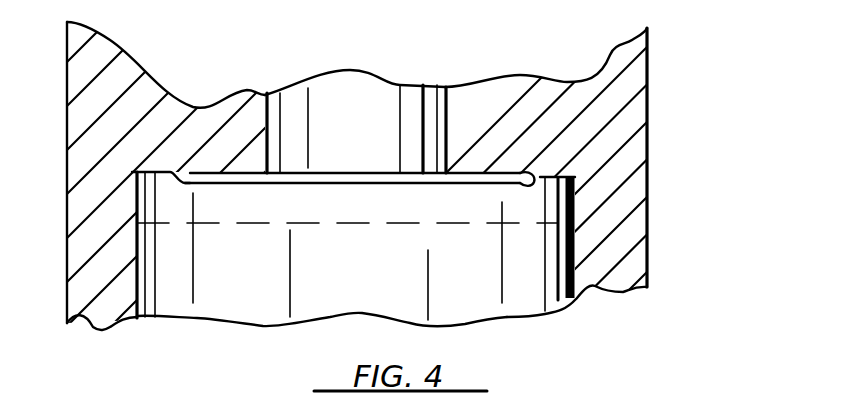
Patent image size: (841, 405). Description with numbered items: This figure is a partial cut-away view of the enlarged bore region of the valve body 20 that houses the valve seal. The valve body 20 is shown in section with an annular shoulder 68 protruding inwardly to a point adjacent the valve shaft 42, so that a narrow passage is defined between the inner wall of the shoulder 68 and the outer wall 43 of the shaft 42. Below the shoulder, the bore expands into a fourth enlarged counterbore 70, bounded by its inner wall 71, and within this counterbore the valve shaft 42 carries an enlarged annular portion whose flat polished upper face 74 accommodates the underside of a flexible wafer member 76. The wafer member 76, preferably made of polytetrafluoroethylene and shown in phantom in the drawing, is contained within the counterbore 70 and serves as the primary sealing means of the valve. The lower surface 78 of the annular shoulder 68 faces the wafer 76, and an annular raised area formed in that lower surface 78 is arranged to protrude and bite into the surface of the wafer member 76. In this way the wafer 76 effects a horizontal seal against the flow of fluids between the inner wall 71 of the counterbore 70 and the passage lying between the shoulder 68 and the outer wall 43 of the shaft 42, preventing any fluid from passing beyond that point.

The valve body 20 is at (632, 107).
The valve shaft 42 is at (338, 95).
The outer wall of shaft member 43 is at (450, 87).
The annular shoulder 68 is at (500, 105).
The fourth enlarged counterbore 70 is at (527, 268).
The inner wall of counterbore 71 is at (527, 222).
The flat polished upper face 74 is at (207, 175).
The flexible wafer member 76 is at (527, 208).
The lower surface of annular shoulder 78 is at (524, 178).